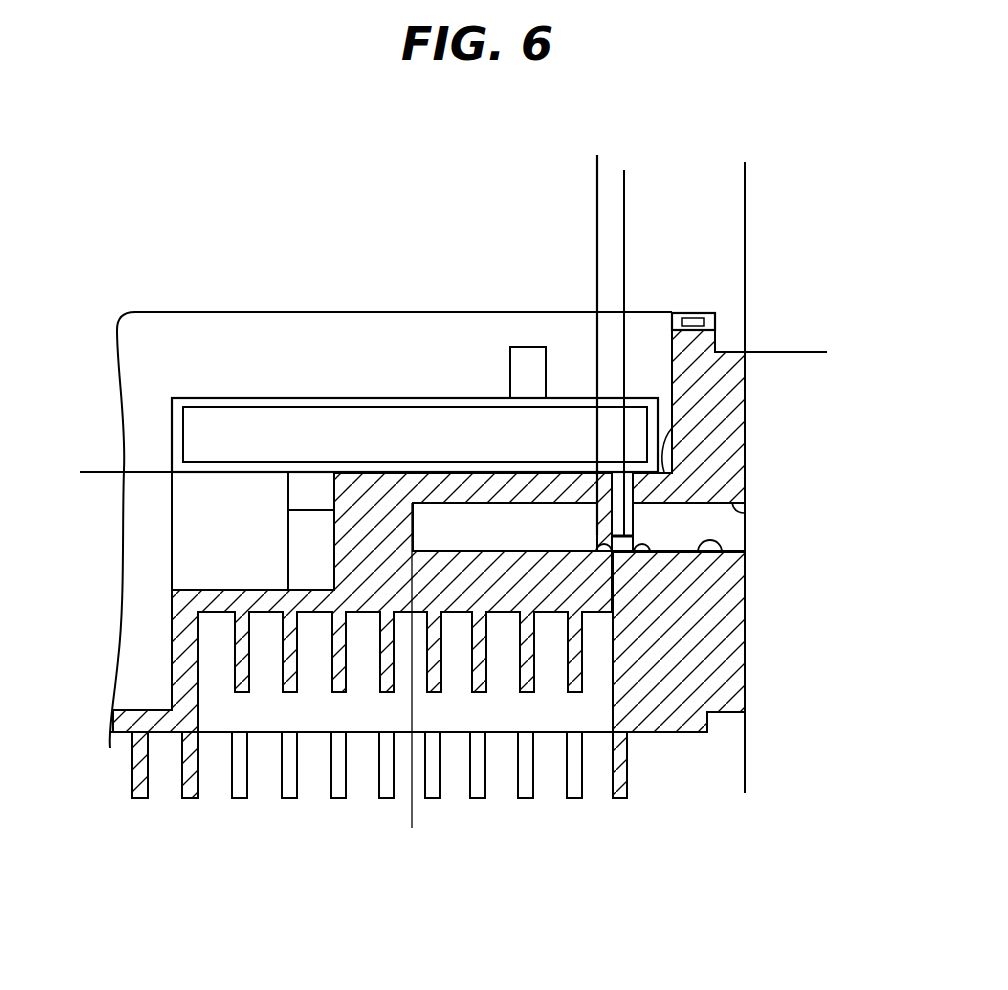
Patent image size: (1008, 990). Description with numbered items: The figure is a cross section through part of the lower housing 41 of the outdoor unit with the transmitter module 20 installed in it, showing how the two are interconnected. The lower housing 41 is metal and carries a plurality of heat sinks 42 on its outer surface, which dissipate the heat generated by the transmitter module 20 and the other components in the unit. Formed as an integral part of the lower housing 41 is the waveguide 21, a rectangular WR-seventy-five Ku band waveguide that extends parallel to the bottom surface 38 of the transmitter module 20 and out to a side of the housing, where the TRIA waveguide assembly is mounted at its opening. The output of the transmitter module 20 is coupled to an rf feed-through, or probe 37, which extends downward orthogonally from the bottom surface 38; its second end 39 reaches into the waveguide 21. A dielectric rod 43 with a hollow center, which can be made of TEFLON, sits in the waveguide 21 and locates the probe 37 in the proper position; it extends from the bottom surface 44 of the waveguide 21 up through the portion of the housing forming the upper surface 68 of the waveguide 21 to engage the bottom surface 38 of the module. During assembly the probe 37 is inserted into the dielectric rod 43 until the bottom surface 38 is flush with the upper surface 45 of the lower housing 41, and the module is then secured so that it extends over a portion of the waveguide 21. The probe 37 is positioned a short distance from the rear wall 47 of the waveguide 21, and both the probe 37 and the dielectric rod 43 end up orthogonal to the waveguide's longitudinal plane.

The transmitter module 20 is at (208, 434).
The waveguide 21 is at (710, 519).
The rf feed-through 37 is at (633, 493).
The bottom surface 38 is at (236, 475).
The second end 39 is at (650, 542).
The lower housing 41 is at (678, 708).
The heat sinks 42 is at (476, 798).
The dielectric rod 43 is at (650, 552).
The bottom surface of the waveguide 44 is at (722, 545).
The upper surface 45 is at (705, 420).
The rear wall 47 is at (616, 555).
The upper surface of the waveguide 68 is at (737, 511).